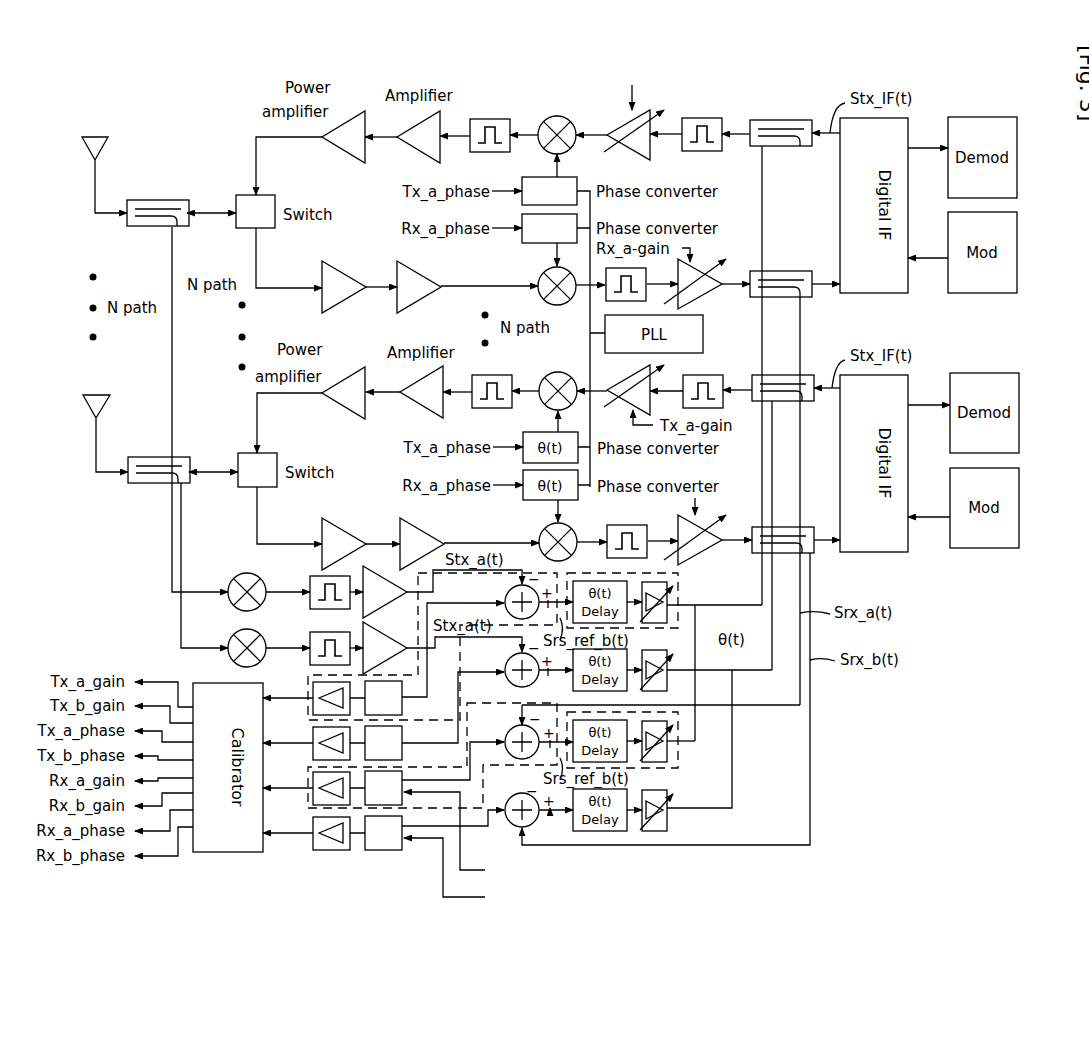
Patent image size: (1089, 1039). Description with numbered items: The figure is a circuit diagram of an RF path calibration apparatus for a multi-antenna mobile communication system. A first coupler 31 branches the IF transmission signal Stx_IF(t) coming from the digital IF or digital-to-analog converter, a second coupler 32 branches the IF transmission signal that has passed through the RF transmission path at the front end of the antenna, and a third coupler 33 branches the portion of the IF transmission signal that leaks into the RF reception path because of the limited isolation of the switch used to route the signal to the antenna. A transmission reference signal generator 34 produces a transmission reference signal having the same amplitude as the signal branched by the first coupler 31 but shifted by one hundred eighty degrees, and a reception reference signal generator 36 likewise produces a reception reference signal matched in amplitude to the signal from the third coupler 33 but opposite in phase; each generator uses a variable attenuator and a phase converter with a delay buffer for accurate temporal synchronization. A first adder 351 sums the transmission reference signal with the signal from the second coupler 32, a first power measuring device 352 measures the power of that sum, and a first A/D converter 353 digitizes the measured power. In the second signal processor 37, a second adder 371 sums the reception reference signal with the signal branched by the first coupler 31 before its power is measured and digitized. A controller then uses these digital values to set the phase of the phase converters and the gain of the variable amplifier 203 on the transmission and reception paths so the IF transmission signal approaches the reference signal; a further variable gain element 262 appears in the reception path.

The first coupler 31 is at (775, 120).
The second coupler 32 is at (157, 200).
The third coupler 33 is at (775, 271).
The transmission reference signal generator 34 is at (682, 586).
The reception reference signal generator 36 is at (680, 745).
The second signal processor 37 is at (423, 764).
The variable amplifier 203 is at (570, 177).
The variable gain amplifier 262 is at (717, 279).
The first adder 351 is at (505, 598).
The first power measuring device 352 is at (404, 705).
The first A/D converter 353 is at (313, 693).
The second adder 371 is at (505, 731).